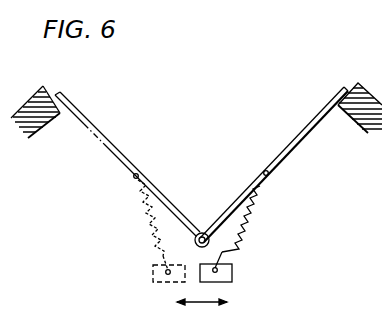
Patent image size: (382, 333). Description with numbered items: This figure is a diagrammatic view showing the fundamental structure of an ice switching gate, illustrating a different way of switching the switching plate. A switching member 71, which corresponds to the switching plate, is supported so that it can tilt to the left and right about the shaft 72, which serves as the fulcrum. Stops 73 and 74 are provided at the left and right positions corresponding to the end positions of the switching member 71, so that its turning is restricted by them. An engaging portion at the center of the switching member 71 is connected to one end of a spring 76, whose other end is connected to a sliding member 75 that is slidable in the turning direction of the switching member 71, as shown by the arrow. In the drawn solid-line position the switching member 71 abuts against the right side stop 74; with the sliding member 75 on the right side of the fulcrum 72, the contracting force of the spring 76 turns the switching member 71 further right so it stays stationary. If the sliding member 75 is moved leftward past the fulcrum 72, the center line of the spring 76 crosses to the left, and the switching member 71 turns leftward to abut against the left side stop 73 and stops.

The switching member 71 is at (290, 141).
The shaft 72 is at (194, 241).
The left side stop 73 is at (45, 120).
The right side stop 74 is at (357, 121).
The sliding member 75 is at (232, 272).
The spring 76 is at (255, 201).